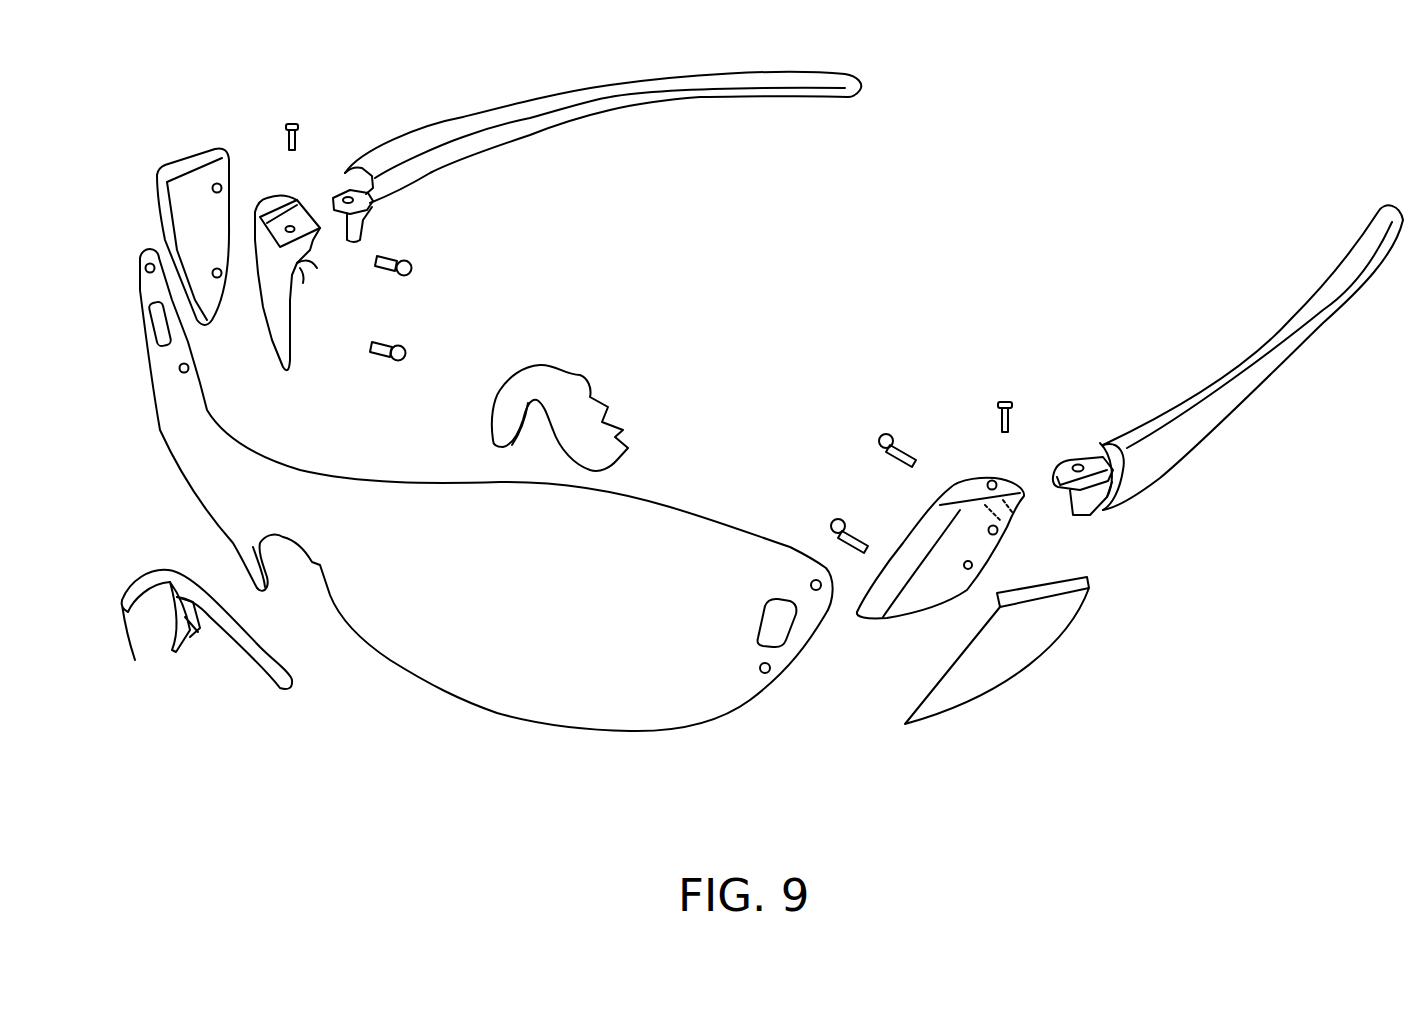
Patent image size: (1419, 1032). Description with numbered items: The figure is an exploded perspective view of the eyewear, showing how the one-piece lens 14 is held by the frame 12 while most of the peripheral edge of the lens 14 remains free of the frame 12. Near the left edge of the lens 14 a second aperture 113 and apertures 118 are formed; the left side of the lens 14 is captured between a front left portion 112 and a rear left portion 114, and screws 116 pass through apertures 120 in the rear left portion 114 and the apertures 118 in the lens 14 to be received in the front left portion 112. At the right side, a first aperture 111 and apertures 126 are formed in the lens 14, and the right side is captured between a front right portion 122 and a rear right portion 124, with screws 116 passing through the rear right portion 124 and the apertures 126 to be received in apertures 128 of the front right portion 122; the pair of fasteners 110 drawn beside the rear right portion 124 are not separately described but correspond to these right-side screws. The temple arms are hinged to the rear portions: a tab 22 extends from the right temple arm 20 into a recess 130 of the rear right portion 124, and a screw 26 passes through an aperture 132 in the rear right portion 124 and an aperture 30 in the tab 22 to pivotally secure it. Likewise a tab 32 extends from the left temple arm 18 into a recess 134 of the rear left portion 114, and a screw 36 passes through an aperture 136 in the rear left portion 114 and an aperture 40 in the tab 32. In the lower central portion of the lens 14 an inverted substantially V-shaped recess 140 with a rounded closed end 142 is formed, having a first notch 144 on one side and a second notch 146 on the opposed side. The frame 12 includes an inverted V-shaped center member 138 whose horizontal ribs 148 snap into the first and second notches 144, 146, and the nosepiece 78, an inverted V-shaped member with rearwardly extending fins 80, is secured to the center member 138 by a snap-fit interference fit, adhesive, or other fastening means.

The frame 12 is at (262, 677).
The lens 14 is at (532, 596).
The left temple arm 18 is at (1277, 344).
The right temple arm 20 is at (638, 104).
The tab 22 is at (364, 207).
The screw 26 is at (291, 120).
The aperture 30 is at (354, 176).
The tab 32 is at (1057, 462).
The screw 36 is at (1004, 396).
The aperture 40 is at (1080, 460).
The nosepiece 78 is at (530, 362).
The fins 80 is at (618, 410).
The screws 110 is at (390, 338).
The first aperture 111 is at (766, 623).
The front left portion 112 is at (1003, 680).
The second aperture 113 is at (154, 326).
The rear left portion 114 is at (1000, 545).
The screws 116 is at (860, 532).
The apertures 118 is at (776, 673).
The apertures 120 is at (965, 562).
The front right portion 122 is at (187, 177).
The rear right portion 124 is at (294, 372).
The apertures 126 is at (144, 268).
The apertures 128 is at (220, 268).
The recess 130 is at (310, 255).
The aperture 132 is at (291, 222).
The recess 134 is at (1015, 506).
The aperture 136 is at (990, 480).
The center member 138 is at (166, 578).
The recess 140 is at (352, 628).
The closed end 142 is at (284, 532).
The first notch 144 is at (254, 546).
The second notch 146 is at (325, 565).
The horizontal ribs 148 is at (183, 645).